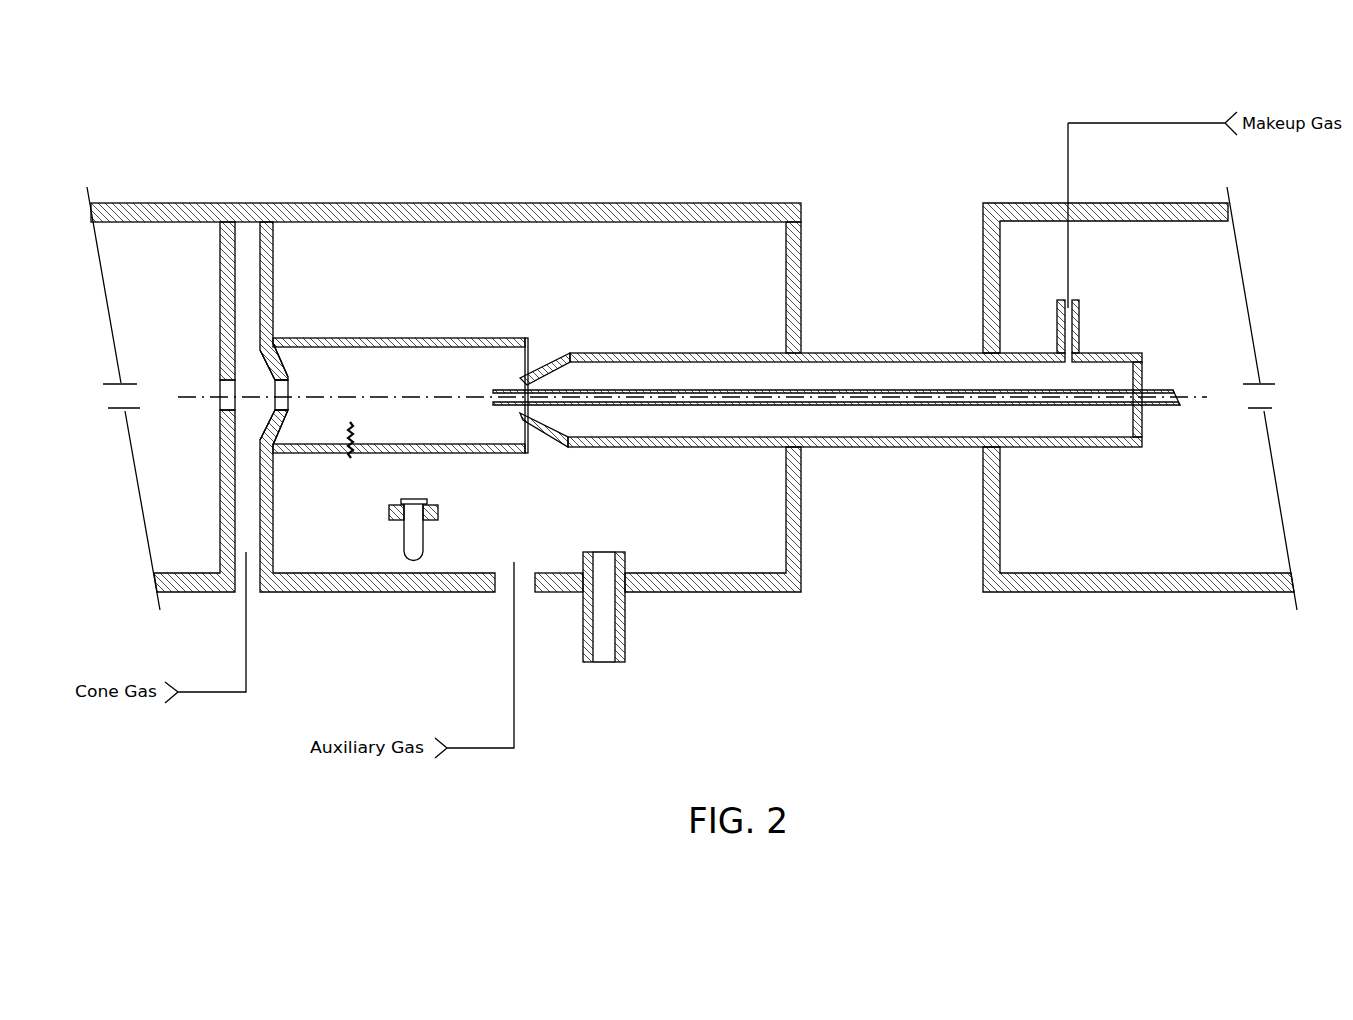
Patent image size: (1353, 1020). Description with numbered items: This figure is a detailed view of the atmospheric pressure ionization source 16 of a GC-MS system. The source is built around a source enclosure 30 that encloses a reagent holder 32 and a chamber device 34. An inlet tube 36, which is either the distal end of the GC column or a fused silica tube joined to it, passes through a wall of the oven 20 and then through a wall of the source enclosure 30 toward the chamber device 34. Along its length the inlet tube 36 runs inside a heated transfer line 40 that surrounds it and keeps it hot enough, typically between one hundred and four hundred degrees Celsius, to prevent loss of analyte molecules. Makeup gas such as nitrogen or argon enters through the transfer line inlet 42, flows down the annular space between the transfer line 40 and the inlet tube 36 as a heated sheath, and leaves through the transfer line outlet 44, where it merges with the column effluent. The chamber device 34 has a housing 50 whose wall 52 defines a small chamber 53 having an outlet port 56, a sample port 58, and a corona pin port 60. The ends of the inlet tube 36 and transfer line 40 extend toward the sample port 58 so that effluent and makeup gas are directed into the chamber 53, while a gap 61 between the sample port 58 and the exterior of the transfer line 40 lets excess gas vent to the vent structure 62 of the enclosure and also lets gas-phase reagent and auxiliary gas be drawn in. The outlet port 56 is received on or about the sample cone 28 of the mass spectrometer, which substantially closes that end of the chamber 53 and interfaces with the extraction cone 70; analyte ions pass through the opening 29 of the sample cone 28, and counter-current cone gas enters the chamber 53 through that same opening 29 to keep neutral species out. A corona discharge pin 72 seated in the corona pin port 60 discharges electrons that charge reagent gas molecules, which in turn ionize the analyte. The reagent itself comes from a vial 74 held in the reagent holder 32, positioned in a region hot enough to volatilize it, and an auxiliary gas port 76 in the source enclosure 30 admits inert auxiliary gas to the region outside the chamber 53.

The atmospheric pressure ionization source 16 is at (633, 126).
The oven 20 is at (1180, 593).
The sample cone 28 is at (276, 378).
The opening 29 is at (292, 387).
The source enclosure 30 is at (802, 551).
The reagent holder 32 is at (438, 512).
The chamber device 34 is at (386, 317).
The inlet tube 36 is at (708, 407).
The heated transfer line 40 is at (797, 374).
The transfer line inlet 42 is at (1057, 318).
The transfer line outlet 44 is at (519, 378).
The housing 50 is at (437, 339).
The wall 52 is at (528, 340).
The chamber 53 is at (426, 395).
The outlet port 56 is at (288, 437).
The sample port 58 is at (519, 430).
The corona pin port 60 is at (345, 457).
The gap 61 is at (538, 452).
The vent structure 62 is at (625, 632).
The extraction cone 70 is at (220, 478).
The corona discharge pin 72 is at (353, 428).
The vial 74 is at (404, 540).
The auxiliary gas port 76 is at (506, 596).